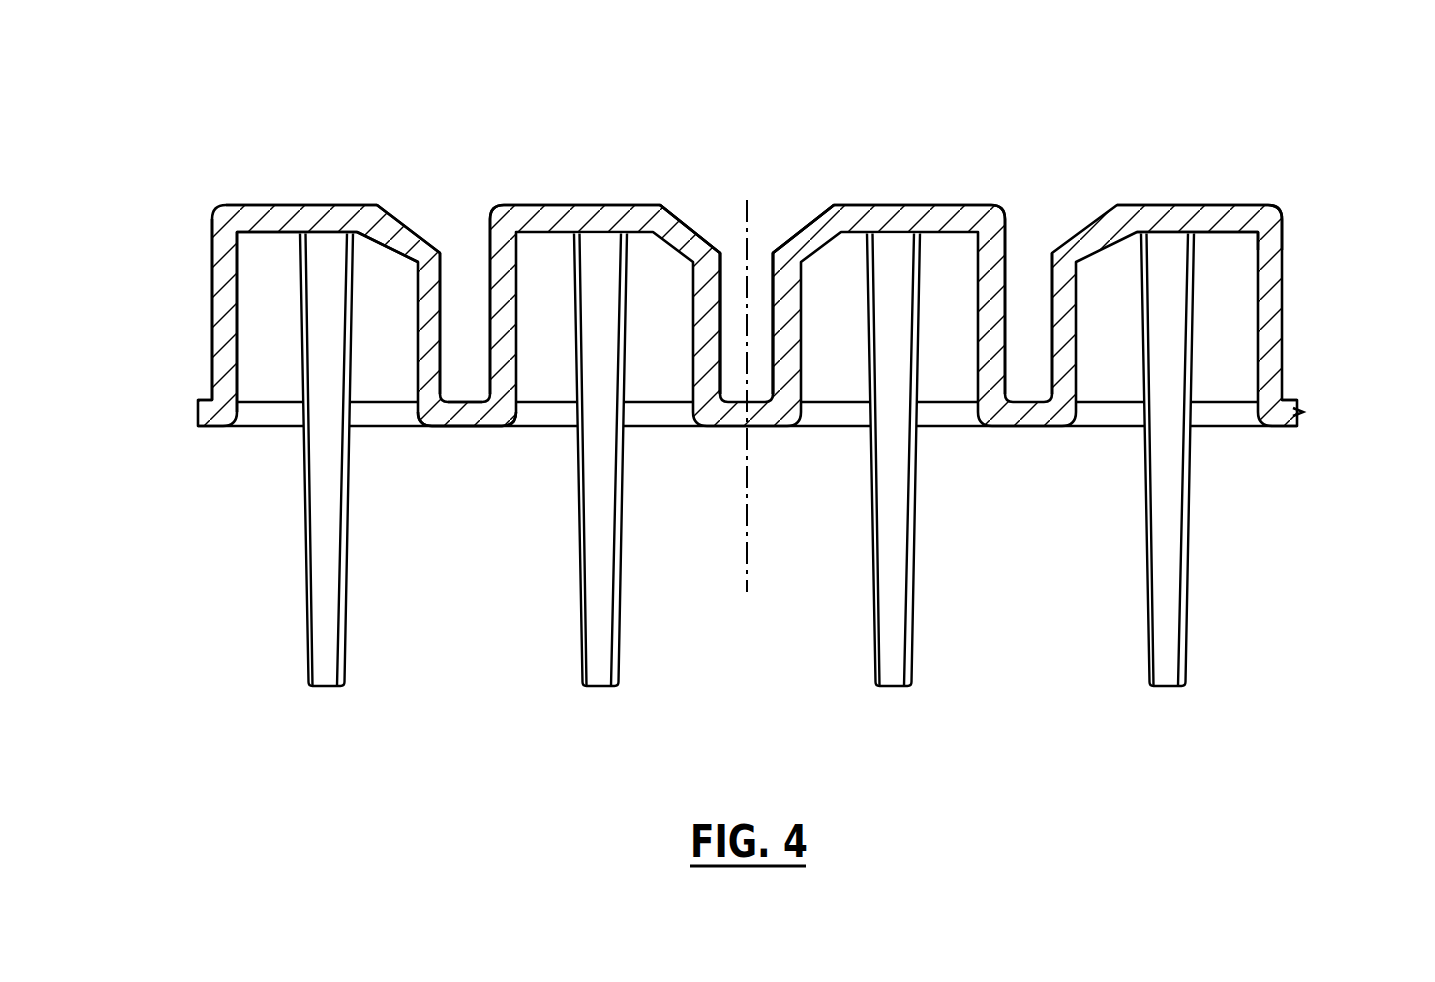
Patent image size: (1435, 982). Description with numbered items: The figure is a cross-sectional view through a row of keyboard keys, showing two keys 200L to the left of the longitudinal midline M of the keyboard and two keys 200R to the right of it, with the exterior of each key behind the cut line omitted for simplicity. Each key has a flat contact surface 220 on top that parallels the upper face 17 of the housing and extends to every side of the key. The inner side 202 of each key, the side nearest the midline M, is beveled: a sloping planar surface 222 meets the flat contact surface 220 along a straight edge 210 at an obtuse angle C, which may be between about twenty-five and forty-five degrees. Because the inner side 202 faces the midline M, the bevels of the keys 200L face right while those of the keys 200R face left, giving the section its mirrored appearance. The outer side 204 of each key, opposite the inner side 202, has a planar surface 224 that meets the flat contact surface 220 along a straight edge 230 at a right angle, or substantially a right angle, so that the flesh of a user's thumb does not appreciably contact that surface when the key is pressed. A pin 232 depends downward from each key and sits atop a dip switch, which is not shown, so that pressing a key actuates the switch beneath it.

The straight edge 210 is at (1112, 204).
The keys to the left of the midline 200L is at (562, 204).
The keys to the right of the midline 200R is at (893, 204).
The flat contact surface 220 is at (300, 204).
The sloping planar surface 222 is at (411, 206).
The inner side 202 is at (445, 272).
The planar surface 224 is at (205, 256).
The outer side 204 is at (210, 318).
The straight edge 230 is at (1282, 206).
The upper face of the housing 17 is at (467, 401).
The pin 232 is at (577, 552).
The obtuse angle C is at (361, 238).
The longitudinal midline M is at (745, 573).